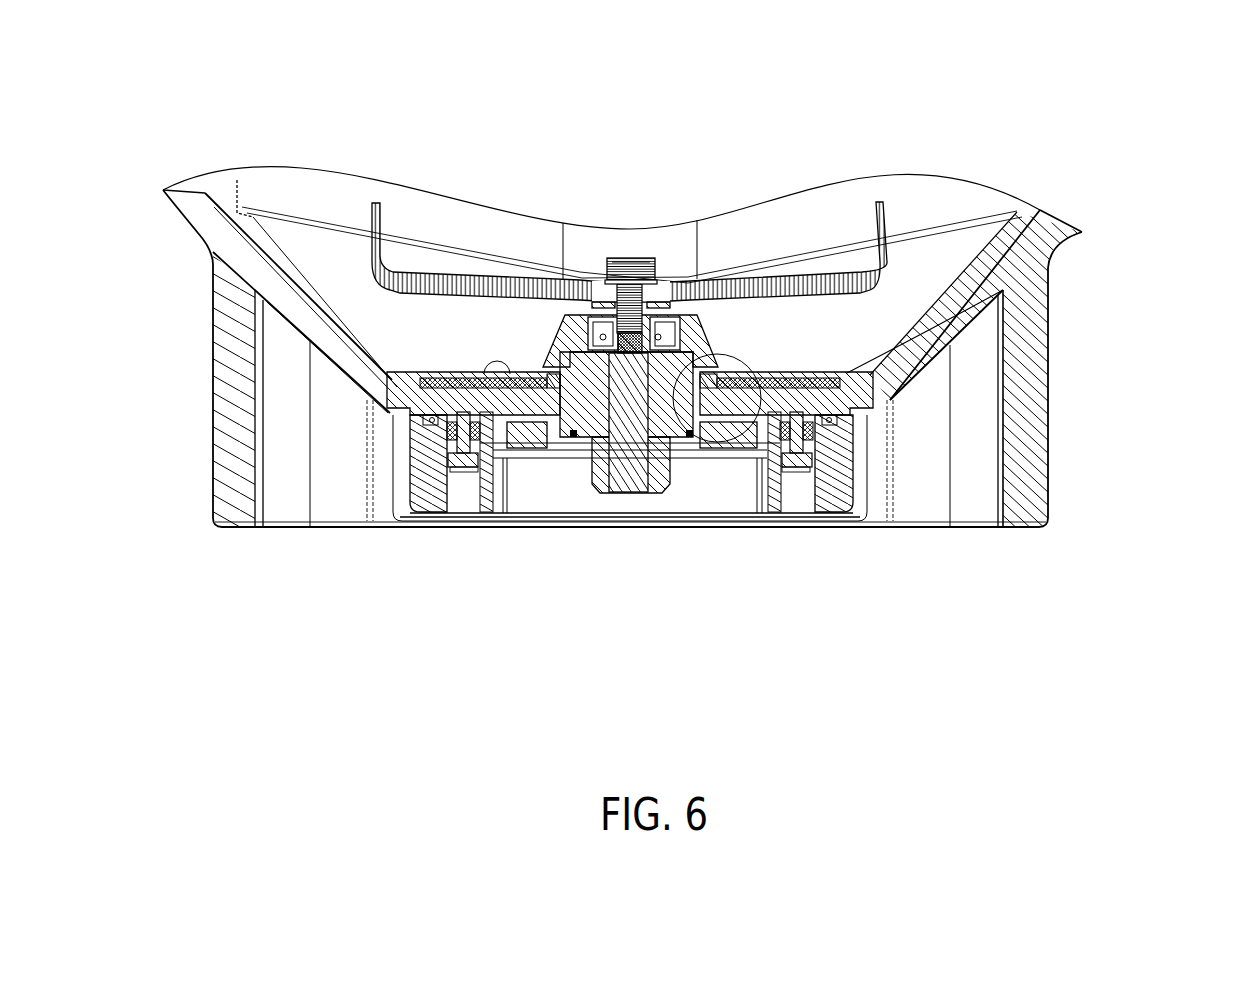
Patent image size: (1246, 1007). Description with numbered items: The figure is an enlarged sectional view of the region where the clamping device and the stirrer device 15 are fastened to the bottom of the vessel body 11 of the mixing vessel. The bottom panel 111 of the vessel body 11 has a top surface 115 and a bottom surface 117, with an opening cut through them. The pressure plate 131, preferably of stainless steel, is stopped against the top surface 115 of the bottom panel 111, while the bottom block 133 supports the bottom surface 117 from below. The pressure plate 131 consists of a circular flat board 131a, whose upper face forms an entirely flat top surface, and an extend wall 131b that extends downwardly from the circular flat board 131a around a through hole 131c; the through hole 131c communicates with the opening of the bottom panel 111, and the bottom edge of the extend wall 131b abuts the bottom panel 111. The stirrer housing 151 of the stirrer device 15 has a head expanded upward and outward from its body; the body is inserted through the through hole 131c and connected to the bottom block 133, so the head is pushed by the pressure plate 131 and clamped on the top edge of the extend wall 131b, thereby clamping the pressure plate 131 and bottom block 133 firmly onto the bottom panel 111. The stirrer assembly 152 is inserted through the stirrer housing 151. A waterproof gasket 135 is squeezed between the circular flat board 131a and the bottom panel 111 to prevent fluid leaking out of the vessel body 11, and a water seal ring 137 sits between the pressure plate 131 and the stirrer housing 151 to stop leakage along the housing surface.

The vessel body 11 is at (1087, 233).
The stirrer device 15 is at (628, 240).
The bottom panel 111 is at (860, 393).
The top surface 115 is at (925, 328).
The bottom surface 117 is at (852, 410).
The pressure plate 131 is at (830, 303).
The circular flat board 131a is at (487, 364).
The extend wall 131b is at (550, 395).
The through hole 131c is at (550, 376).
The bottom block 133 is at (827, 497).
The waterproof gasket 135 is at (787, 373).
The water seal ring 137 is at (713, 300).
The stirrer housing 151 is at (567, 395).
The stirrer assembly 152 is at (637, 505).